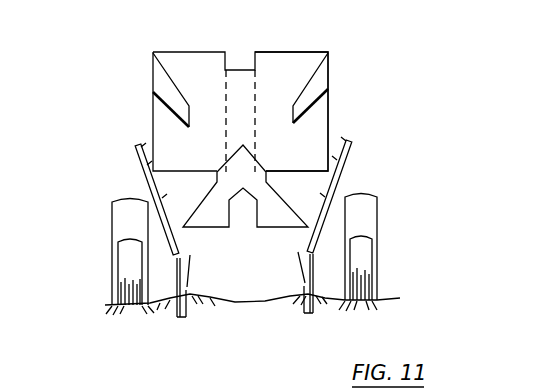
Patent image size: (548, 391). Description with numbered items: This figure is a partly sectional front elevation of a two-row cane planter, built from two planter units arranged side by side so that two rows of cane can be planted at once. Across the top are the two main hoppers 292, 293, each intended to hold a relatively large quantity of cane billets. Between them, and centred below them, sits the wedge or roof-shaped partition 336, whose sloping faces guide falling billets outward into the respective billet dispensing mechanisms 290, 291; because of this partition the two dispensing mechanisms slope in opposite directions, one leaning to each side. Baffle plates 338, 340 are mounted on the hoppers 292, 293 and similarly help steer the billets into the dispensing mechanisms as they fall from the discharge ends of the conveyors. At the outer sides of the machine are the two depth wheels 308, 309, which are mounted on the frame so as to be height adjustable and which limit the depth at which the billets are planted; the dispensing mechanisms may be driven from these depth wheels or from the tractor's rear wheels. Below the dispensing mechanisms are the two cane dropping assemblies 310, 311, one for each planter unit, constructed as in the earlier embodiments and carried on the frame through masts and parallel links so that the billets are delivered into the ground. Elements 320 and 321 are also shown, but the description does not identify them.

The main hopper 293 is at (153, 52).
The main hopper 292 is at (327, 52).
The baffle plate 340 is at (168, 91).
The baffle plate 338 is at (318, 80).
The roof-shaped partition 336 is at (244, 140).
The billet dispensing mechanism 291 is at (136, 146).
The billet dispensing mechanism 290 is at (349, 142).
The left post 321 is at (112, 202).
The right post 320 is at (368, 197).
The depth wheel 309 is at (118, 282).
The depth wheel 308 is at (365, 238).
The cane dropping assembly 311 is at (190, 287).
The cane dropping assembly 310 is at (298, 287).